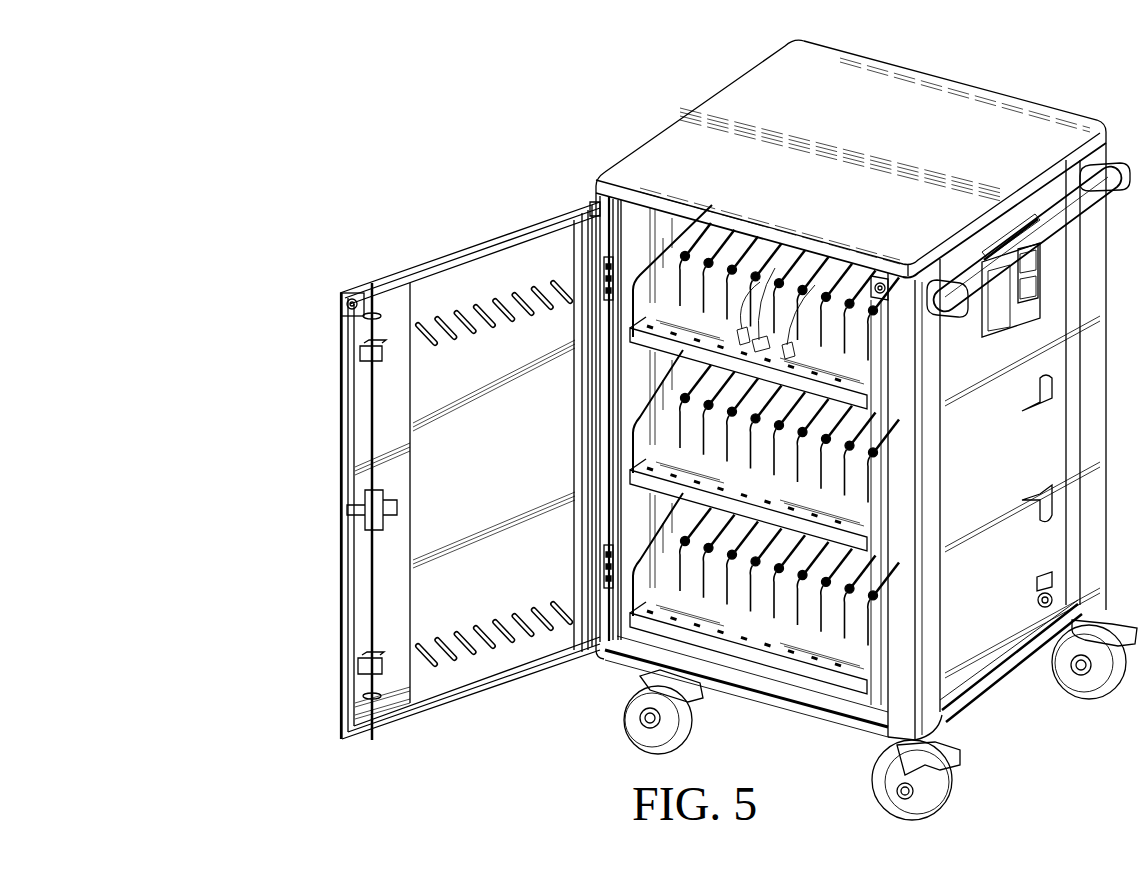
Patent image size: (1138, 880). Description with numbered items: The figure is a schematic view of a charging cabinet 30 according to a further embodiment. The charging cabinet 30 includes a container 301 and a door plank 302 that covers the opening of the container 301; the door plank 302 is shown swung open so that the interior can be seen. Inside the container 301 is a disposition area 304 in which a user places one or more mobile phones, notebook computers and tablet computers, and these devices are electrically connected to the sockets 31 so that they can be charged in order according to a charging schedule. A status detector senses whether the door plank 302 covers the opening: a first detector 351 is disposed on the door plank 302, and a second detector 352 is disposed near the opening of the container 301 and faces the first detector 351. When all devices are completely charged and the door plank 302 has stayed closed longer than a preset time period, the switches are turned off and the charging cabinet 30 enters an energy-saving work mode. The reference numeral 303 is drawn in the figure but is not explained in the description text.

The charging cabinet 30 is at (228, 78).
The container 301 is at (755, 87).
The door plank 302 is at (395, 280).
The partition slot 303 is at (680, 237).
The disposition area 304 is at (812, 608).
The sockets 31 is at (660, 327).
The first detector 351 is at (348, 297).
The second detector 352 is at (888, 292).